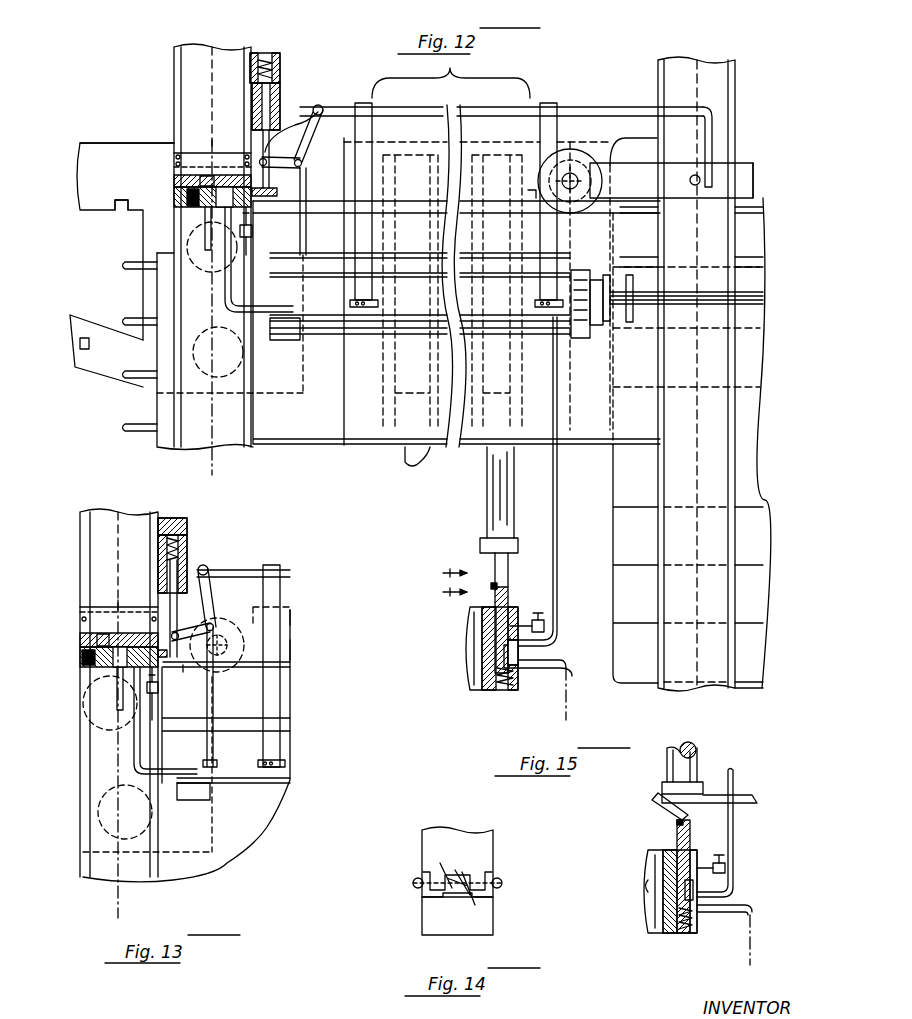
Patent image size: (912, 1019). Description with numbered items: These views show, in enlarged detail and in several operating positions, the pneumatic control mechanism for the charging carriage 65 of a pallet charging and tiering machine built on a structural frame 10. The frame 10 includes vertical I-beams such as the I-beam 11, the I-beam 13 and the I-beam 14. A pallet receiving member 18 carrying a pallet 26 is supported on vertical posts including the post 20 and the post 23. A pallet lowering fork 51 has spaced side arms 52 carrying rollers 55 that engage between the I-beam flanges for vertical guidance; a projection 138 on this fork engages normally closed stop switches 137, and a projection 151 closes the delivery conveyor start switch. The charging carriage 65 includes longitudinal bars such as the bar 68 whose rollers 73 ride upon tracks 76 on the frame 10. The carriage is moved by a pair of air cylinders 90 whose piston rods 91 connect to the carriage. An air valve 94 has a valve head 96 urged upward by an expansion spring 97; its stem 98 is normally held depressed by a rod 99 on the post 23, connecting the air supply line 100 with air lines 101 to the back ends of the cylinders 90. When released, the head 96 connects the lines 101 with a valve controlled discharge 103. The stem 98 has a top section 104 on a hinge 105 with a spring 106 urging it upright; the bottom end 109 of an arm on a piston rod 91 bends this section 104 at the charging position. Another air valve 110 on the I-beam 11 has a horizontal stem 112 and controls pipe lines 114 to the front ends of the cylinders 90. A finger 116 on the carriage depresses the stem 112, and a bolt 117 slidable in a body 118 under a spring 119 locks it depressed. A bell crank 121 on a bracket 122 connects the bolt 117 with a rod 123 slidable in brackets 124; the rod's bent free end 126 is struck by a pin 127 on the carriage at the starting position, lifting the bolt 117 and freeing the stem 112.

In FIG. 12, the structural frame 10 is at (172, 82).
In FIG. 13, the structural frame 10 is at (80, 537).
In FIG. 12, the vertical I-beam 11 is at (174, 53).
In FIG. 13, the vertical I-beam 11 is at (85, 514).
In FIG. 12, the vertical I-beam 13 is at (735, 95).
In FIG. 12, the vertical I-beam 14 is at (441, 582).
In FIG. 12, the pallet receiving member 18 is at (352, 162).
In FIG. 13, the pallet receiving member 18 is at (292, 622).
In FIG. 12, the vertical post 20 is at (405, 458).
In FIG. 12, the vertical post 23 is at (487, 470).
In FIG. 15, the vertical post 23 is at (700, 757).
In FIG. 12, the pallet 26 is at (418, 145).
In FIG. 13, the pallet 26 is at (262, 618).
In FIG. 12, the pallet lowering fork 51 is at (100, 160).
In FIG. 12, the side arm 52 is at (100, 152).
In FIG. 12, the roller 55 is at (200, 258).
In FIG. 13, the roller 55 is at (95, 725).
In FIG. 12, the charging carriage 65 is at (756, 187).
In FIG. 13, the charging carriage 65 is at (292, 653).
In FIG. 12, the longitudinal bar 68 is at (752, 175).
In FIG. 13, the longitudinal bar 68 is at (290, 645).
In FIG. 12, the roller 73 is at (590, 150).
In FIG. 13, the roller 73 is at (225, 635).
In FIG. 12, the track 76 is at (650, 213).
In FIG. 12, the air cylinder 90 is at (365, 338).
In FIG. 13, the air cylinder 90 is at (255, 790).
In FIG. 12, the piston rod 91 is at (765, 297).
In FIG. 12, the air valve 94 is at (490, 637).
In FIG. 15, the air valve 94 is at (663, 892).
In FIG. 12, the valve head 96 is at (190, 196).
In FIG. 13, the valve head 96 is at (115, 648).
In FIG. 15, the valve head 96 is at (675, 868).
In FIG. 12, the expansion spring 97 is at (203, 175).
In FIG. 13, the expansion spring 97 is at (103, 633).
In FIG. 15, the expansion spring 97 is at (692, 918).
In FIG. 12, the valve stem 98 is at (510, 594).
In FIG. 14, the valve stem 98 is at (480, 918).
In FIG. 15, the valve stem 98 is at (686, 832).
In FIG. 12, the rod 99 is at (480, 545).
In FIG. 15, the rod 99 is at (662, 787).
In FIG. 12, the air supply line 100 is at (205, 217).
In FIG. 13, the air supply line 100 is at (118, 678).
In FIG. 15, the air supply line 100 is at (752, 906).
In FIG. 12, the air line 101 is at (557, 525).
In FIG. 15, the air line 101 is at (735, 828).
In FIG. 12, the valve controlled discharge 103 is at (253, 230).
In FIG. 13, the valve controlled discharge 103 is at (150, 696).
In FIG. 15, the valve controlled discharge 103 is at (726, 868).
In FIG. 12, the top section 104 is at (508, 570).
In FIG. 14, the top section 104 is at (483, 850).
In FIG. 15, the top section 104 is at (652, 800).
In FIG. 12, the hinge 105 is at (492, 586).
In FIG. 14, the hinge 105 is at (498, 884).
In FIG. 15, the hinge 105 is at (677, 822).
In FIG. 14, the spring 106 is at (468, 880).
In FIG. 15, the bottom end 109 is at (710, 796).
In FIG. 12, the air valve 110 is at (172, 179).
In FIG. 13, the air valve 110 is at (80, 662).
In FIG. 12, the valve stem 112 is at (277, 190).
In FIG. 13, the valve stem 112 is at (165, 668).
In FIG. 12, the pipe line 114 is at (263, 330).
In FIG. 13, the pipe line 114 is at (190, 800).
In FIG. 12, the projecting finger 116 is at (530, 193).
In FIG. 13, the projecting finger 116 is at (186, 672).
In FIG. 12, the bolt 117 is at (270, 105).
In FIG. 13, the bolt 117 is at (188, 575).
In FIG. 12, the body 118 is at (276, 63).
In FIG. 13, the body 118 is at (188, 548).
In FIG. 13, the spring 119 is at (188, 528).
In FIG. 12, the bell crank 121 is at (322, 110).
In FIG. 13, the bell crank 121 is at (212, 602).
In FIG. 12, the bracket 122 is at (307, 225).
In FIG. 13, the bracket 122 is at (213, 712).
In FIG. 12, the rod 123 is at (430, 117).
In FIG. 13, the rod 123 is at (290, 575).
In FIG. 12, the bracket 124 is at (374, 112).
In FIG. 13, the bracket 124 is at (280, 568).
In FIG. 12, the free end 126 is at (715, 128).
In FIG. 12, the pin 127 is at (690, 181).
In FIG. 12, the stop switch 137 is at (125, 265).
In FIG. 12, the projection 138 is at (120, 204).
In FIG. 12, the projection 151 is at (83, 345).